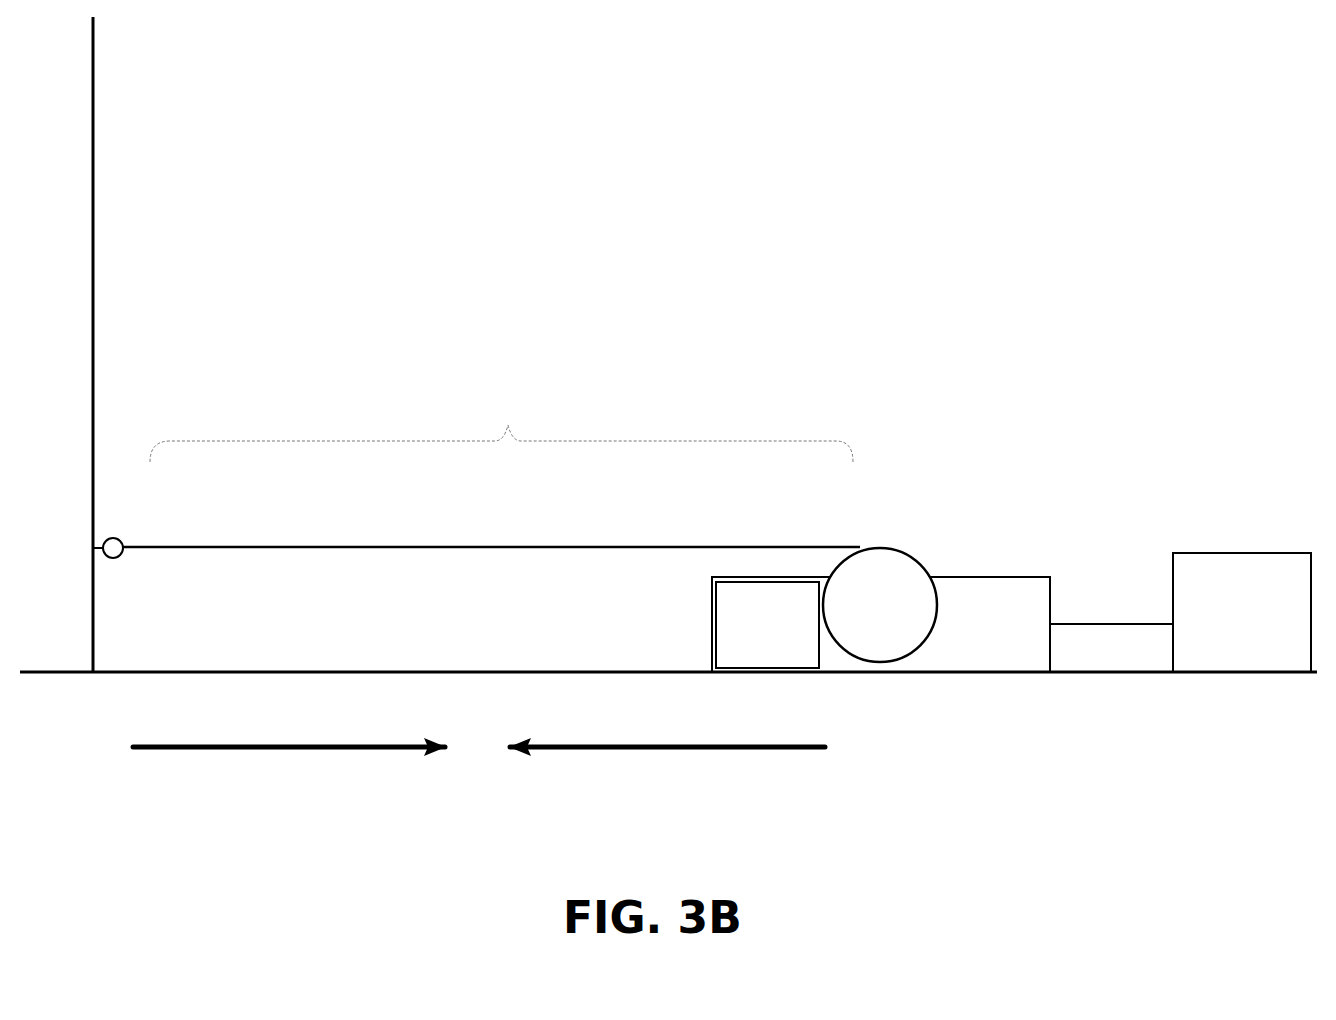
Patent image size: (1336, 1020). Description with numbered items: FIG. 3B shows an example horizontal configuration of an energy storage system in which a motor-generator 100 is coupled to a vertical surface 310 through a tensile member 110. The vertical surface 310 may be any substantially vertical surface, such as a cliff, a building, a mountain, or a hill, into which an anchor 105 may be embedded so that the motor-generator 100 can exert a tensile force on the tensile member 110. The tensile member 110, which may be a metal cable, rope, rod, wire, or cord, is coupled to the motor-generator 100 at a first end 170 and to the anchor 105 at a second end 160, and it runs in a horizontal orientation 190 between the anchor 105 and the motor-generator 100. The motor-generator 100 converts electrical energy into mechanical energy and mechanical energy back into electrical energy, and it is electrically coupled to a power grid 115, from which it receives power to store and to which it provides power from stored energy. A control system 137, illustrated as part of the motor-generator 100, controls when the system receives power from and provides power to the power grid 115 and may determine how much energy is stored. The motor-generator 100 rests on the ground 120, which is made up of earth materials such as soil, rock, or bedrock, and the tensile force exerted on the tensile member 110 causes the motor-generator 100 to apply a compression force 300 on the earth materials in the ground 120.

The vertical surface 310 is at (100, 216).
The anchor 105 is at (141, 527).
The second end 160 is at (140, 570).
The tensile member 110 is at (477, 541).
The horizontal orientation 190 is at (501, 428).
The first end 170 is at (886, 534).
The control system 137 is at (754, 656).
The motor-generator 100 is at (970, 661).
The power grid 115 is at (1224, 636).
The ground 120 is at (1097, 879).
The compression force 300 is at (546, 724).